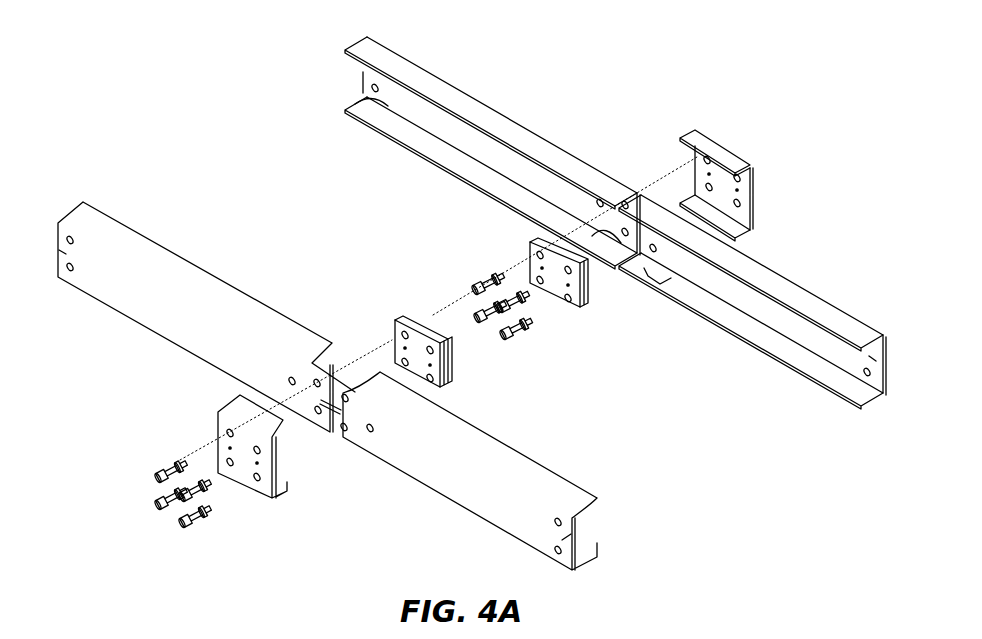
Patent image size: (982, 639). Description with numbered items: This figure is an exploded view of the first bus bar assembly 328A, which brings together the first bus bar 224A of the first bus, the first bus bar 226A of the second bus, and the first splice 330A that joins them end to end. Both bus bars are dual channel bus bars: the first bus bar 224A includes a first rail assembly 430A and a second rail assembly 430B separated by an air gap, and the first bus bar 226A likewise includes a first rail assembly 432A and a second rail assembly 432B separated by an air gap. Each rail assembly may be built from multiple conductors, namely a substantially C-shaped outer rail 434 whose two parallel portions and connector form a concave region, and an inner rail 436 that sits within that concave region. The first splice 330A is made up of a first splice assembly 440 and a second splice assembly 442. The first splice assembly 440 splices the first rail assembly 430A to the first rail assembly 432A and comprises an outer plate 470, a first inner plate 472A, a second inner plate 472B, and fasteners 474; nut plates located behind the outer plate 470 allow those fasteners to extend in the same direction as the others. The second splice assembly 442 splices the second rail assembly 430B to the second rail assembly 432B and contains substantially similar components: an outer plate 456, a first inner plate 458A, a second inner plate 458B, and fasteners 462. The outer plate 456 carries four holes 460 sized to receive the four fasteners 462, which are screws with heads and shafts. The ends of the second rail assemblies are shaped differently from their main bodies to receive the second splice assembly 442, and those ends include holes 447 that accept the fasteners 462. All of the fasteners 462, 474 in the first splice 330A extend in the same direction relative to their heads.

The first bus bar assembly 328A is at (648, 70).
The first splice 330A is at (735, 108).
The first bus bar 224A is at (443, 80).
The first bus bar 226A is at (773, 267).
The first rail assembly 430A is at (357, 45).
The second rail assembly 430B is at (107, 215).
The first rail assembly 432A is at (773, 362).
The second rail assembly 432B is at (550, 468).
The outer rail 434 is at (347, 52).
The inner rail 436 is at (365, 108).
The first splice assembly 440 is at (730, 150).
The outer plate 470 is at (753, 197).
The first inner plate 472A is at (588, 297).
The second inner plate 472B is at (527, 247).
The fasteners 474 is at (487, 280).
The first inner plate 458A is at (390, 327).
The second inner plate 458B is at (453, 373).
The holes 447 is at (343, 428).
The second splice assembly 442 is at (253, 492).
The outer plate 456 is at (218, 412).
The holes 460 is at (227, 433).
The fasteners 462 is at (155, 475).